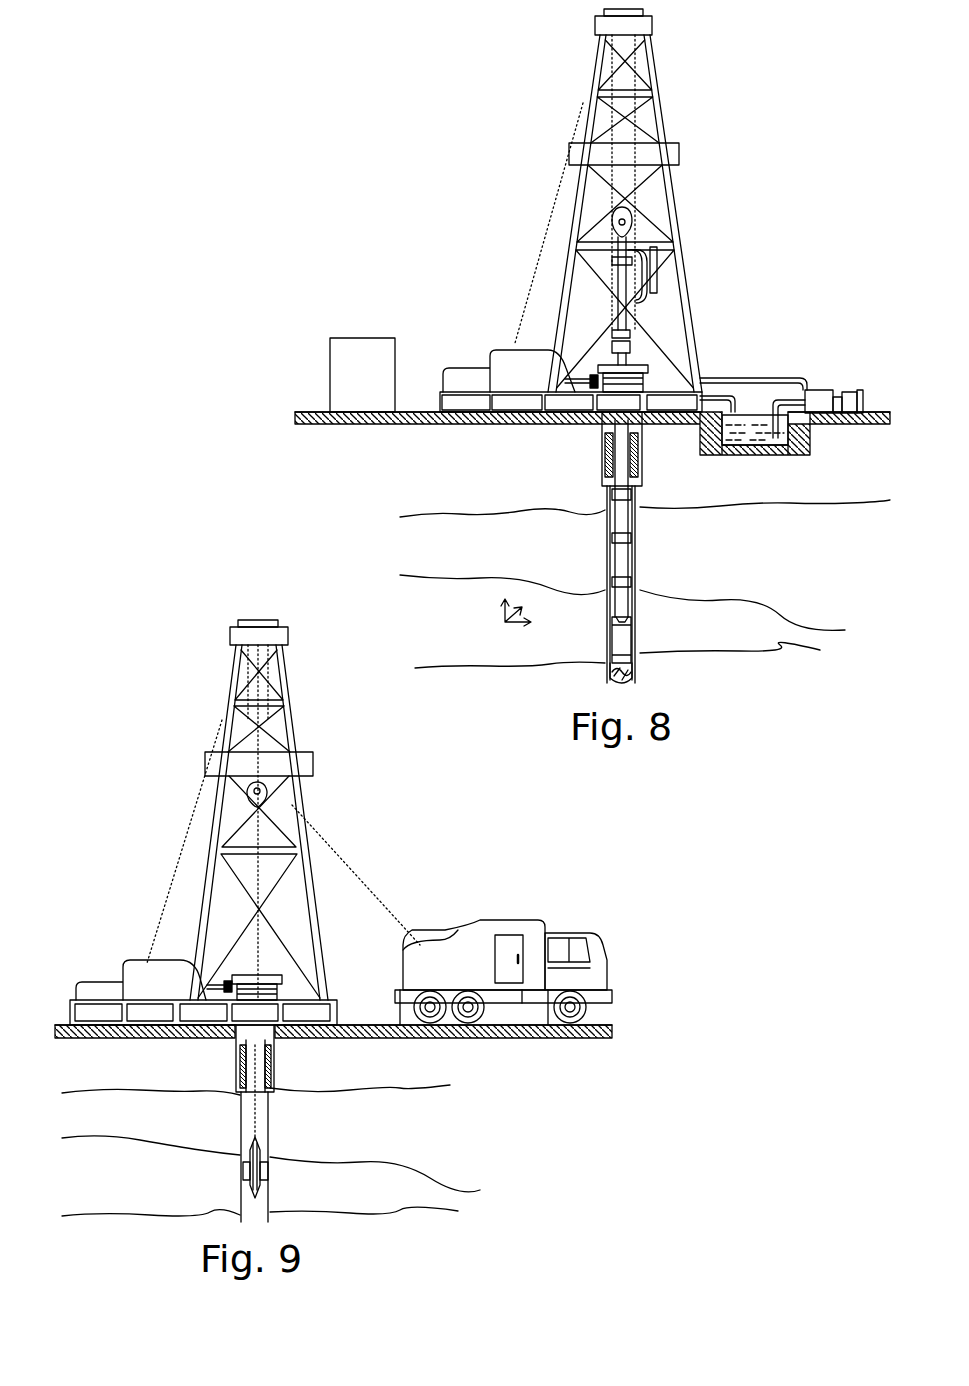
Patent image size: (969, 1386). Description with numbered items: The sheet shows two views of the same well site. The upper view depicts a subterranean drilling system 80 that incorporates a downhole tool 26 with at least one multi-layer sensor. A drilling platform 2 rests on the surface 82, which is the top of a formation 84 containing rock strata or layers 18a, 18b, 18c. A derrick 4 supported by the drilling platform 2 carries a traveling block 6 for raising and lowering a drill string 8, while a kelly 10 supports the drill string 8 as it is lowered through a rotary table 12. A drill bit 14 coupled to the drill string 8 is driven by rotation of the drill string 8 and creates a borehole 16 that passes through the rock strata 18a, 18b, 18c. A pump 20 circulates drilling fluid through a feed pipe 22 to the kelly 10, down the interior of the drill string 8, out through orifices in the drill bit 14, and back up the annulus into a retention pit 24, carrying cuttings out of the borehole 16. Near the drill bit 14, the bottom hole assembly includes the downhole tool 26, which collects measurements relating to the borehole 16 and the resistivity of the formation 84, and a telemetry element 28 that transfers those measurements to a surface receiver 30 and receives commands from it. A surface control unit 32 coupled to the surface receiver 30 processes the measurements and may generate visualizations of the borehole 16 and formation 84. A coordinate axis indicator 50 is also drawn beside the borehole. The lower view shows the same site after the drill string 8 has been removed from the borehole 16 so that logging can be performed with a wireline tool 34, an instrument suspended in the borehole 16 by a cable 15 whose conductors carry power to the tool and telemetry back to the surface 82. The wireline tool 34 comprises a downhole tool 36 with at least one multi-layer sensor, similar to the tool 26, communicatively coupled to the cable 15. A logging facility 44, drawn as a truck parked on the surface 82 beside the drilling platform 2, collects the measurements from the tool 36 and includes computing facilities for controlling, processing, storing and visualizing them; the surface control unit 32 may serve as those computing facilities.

In FIG. 8, the drilling platform 2 is at (440, 398).
In FIG. 9, the drilling platform 2 is at (340, 1015).
In FIG. 8, the derrick 4 is at (660, 115).
In FIG. 9, the derrick 4 is at (320, 910).
In FIG. 8, the traveling block 6 is at (635, 218).
In FIG. 9, the traveling block 6 is at (268, 787).
In FIG. 8, the drill string 8 is at (622, 507).
In FIG. 8, the kelly 10 is at (622, 275).
In FIG. 8, the rotary table 12 is at (640, 378).
In FIG. 9, the rotary table 12 is at (265, 975).
In FIG. 8, the drill bit 14 is at (636, 680).
In FIG. 9, the cable 15 is at (255, 1070).
In FIG. 8, the borehole 16 is at (636, 522).
In FIG. 9, the borehole 16 is at (262, 1113).
In FIG. 8, the rock strata or layer 18a is at (445, 612).
In FIG. 9, the rock strata or layer 18a is at (440, 1077).
In FIG. 8, the rock strata or layer 18b is at (645, 527).
In FIG. 9, the rock strata or layer 18b is at (102, 1127).
In FIG. 8, the rock strata or layer 18c is at (792, 498).
In FIG. 9, the rock strata or layer 18c is at (100, 1207).
In FIG. 8, the pump 20 is at (818, 388).
In FIG. 8, the feed pipe 22 is at (745, 380).
In FIG. 8, the retention pit 24 is at (770, 445).
In FIG. 8, the downhole tool 26 is at (612, 645).
In FIG. 8, the telemetry element 28 is at (633, 627).
In FIG. 8, the surface receiver 30 is at (622, 332).
In FIG. 8, the surface control unit 32 is at (376, 385).
In FIG. 9, the wireline tool 34 is at (252, 1152).
In FIG. 9, the downhole tool 36 is at (250, 1168).
In FIG. 9, the logging facility 44 is at (485, 920).
In FIG. 8, the coordinate axes 50 is at (498, 620).
In FIG. 8, the subterranean drilling system 80 is at (772, 168).
In FIG. 8, the surface 82 is at (315, 410).
In FIG. 9, the surface 82 is at (65, 1025).
In FIG. 8, the formation 84 is at (360, 489).
In FIG. 9, the formation 84 is at (575, 1105).